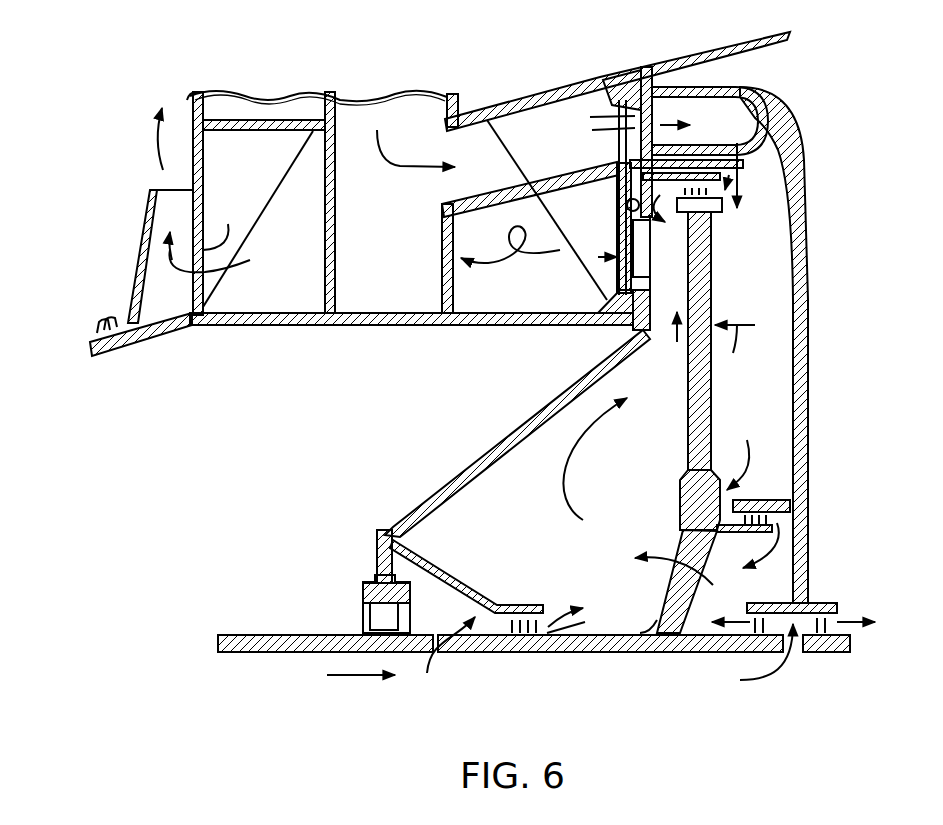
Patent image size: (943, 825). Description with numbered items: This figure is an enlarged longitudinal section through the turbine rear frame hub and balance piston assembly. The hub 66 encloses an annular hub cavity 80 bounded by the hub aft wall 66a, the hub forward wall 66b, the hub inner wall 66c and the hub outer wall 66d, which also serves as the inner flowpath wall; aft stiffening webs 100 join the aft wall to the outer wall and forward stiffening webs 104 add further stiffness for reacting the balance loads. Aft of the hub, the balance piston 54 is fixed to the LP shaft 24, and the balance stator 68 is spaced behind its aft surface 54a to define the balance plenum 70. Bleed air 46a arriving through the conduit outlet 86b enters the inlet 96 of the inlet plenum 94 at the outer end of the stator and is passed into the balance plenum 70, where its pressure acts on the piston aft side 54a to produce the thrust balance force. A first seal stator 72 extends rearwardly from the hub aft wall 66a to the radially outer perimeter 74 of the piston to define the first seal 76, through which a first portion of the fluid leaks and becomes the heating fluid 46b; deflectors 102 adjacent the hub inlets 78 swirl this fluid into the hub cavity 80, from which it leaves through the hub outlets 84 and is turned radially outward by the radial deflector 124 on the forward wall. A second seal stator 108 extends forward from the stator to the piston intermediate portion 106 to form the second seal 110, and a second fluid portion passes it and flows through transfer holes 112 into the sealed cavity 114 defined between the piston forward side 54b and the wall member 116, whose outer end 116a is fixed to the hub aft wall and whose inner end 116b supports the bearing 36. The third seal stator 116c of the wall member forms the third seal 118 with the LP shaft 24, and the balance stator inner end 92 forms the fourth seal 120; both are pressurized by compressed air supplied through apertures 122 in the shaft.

The low pressure shaft 24 is at (265, 633).
The bearing 36 is at (362, 607).
The bleed air / balancing fluid 46a is at (377, 132).
The heating fluid 46b is at (578, 258).
The balance piston 54 is at (675, 477).
The balance piston aft surface 54a is at (712, 407).
The balance piston forward side 54b is at (687, 440).
The hub 66 is at (262, 330).
The hub aft wall 66a is at (626, 205).
The hub forward wall 66b is at (203, 198).
The hub inner wall 66c is at (397, 330).
The hub outer wall 66d is at (226, 135).
The balance stator 68 is at (810, 307).
The balance plenum 70 is at (771, 315).
The first seal stator 72 is at (615, 168).
The radially outer perimeter 74 is at (714, 210).
The first seal 76 is at (702, 216).
The hub inlets 78 is at (612, 256).
The hub cavity 80 is at (306, 300).
The hub outlets 84 is at (197, 226).
The conduit outlet 86b is at (630, 117).
The balance stator inner end 92 is at (820, 603).
The inlet plenum 94 is at (744, 138).
The inlet 96 is at (680, 85).
The aft stiffening webs 100 is at (500, 147).
The deflectors 102 is at (653, 330).
The forward stiffening webs 104 is at (260, 215).
The intermediate portion 106 is at (687, 540).
The second seal stator 108 is at (767, 500).
The second seal 110 is at (773, 517).
The transfer holes 112 is at (713, 583).
The sealed cavity 114 is at (518, 535).
The wall member 116 is at (470, 457).
The wall member outer end 116a is at (620, 333).
The wall member inner end 116b is at (380, 550).
The third seal stator 116c is at (503, 607).
The third seal 118 is at (602, 612).
The fourth seal 120 is at (838, 628).
The apertures 122 is at (457, 643).
The radial deflector 124 is at (134, 278).